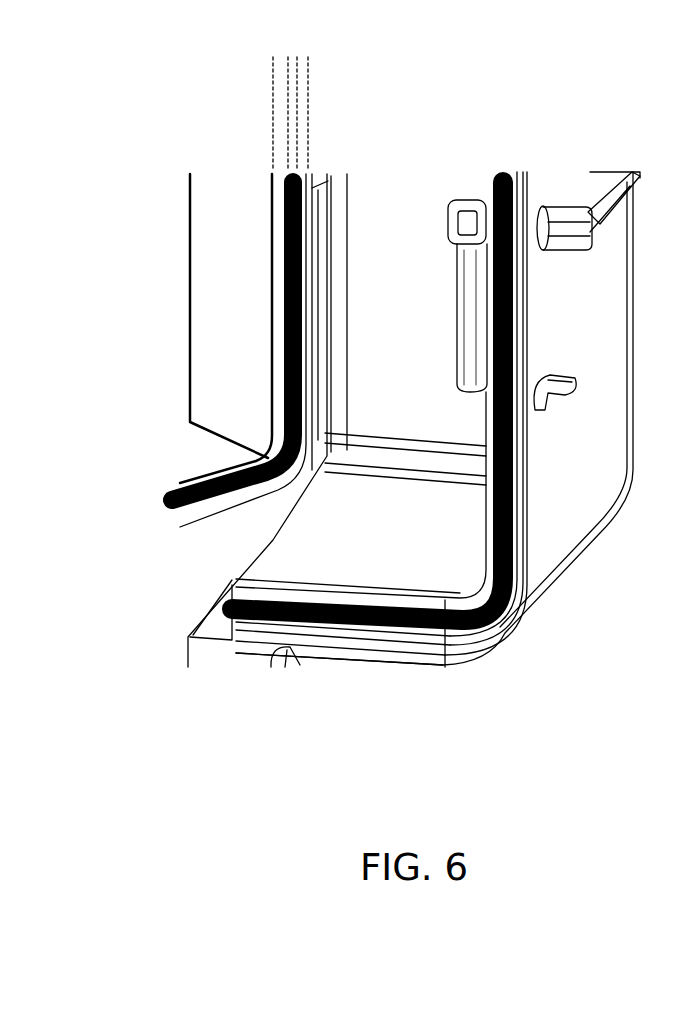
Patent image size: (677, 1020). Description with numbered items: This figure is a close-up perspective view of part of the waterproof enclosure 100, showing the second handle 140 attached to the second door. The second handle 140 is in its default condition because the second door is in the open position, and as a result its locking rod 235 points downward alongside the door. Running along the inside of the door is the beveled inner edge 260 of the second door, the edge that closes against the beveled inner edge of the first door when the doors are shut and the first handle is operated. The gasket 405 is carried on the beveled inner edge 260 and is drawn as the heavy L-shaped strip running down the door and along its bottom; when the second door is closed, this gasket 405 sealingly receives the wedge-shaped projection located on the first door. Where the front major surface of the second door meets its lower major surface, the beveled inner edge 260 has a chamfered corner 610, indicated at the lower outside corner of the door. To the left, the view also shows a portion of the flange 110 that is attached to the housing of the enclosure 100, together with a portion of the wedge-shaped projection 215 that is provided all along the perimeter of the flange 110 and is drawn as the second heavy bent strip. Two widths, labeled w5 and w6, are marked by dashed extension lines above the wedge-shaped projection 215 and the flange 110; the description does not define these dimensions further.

The enclosure 100 is at (129, 750).
The flange 110 is at (270, 276).
The second handle 140 is at (593, 245).
The wedge-shaped projection 215 is at (283, 360).
The locking rod 235 is at (455, 338).
The beveled inner edge 260 is at (456, 543).
The gasket 405 is at (509, 505).
The chamfered corner 610 is at (495, 665).
The bar width dimension w5 is at (309, 83).
The channel width dimension w6 is at (326, 143).